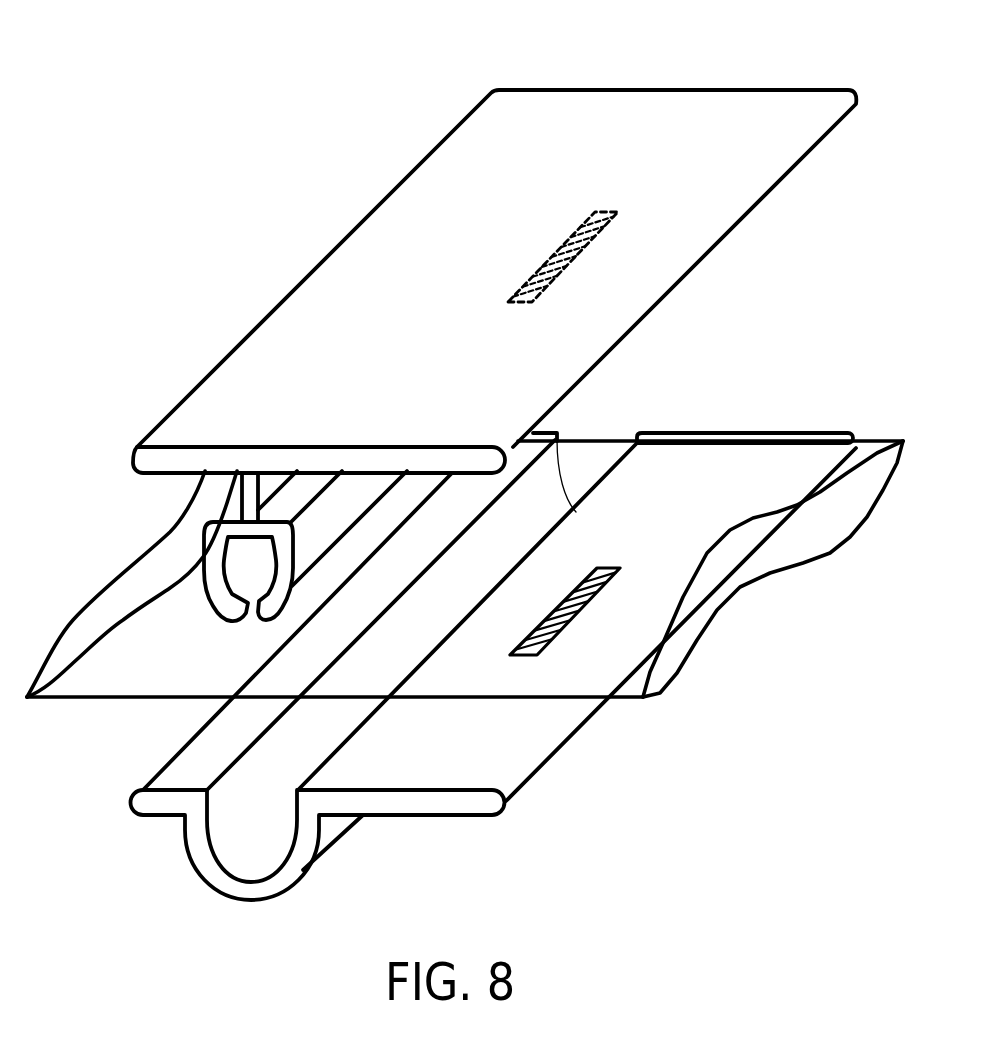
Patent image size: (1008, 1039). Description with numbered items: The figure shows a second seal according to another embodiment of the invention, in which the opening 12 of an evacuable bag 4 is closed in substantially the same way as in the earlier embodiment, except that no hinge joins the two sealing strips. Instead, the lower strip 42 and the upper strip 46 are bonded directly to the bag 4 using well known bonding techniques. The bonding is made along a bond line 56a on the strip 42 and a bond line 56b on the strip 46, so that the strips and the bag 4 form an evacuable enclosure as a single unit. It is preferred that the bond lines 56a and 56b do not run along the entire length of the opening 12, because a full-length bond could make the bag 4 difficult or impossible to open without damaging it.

The bag 4 is at (163, 660).
The opening 12 is at (833, 527).
The strip 42 is at (503, 752).
The strip 46 is at (585, 115).
The bond line 56a is at (572, 590).
The bond line 56b is at (552, 258).